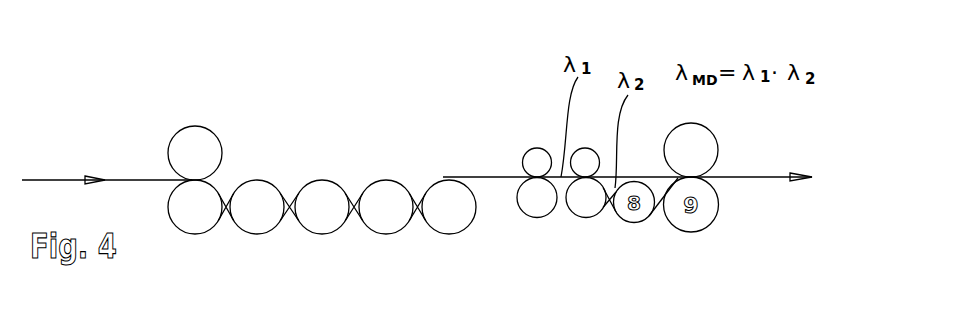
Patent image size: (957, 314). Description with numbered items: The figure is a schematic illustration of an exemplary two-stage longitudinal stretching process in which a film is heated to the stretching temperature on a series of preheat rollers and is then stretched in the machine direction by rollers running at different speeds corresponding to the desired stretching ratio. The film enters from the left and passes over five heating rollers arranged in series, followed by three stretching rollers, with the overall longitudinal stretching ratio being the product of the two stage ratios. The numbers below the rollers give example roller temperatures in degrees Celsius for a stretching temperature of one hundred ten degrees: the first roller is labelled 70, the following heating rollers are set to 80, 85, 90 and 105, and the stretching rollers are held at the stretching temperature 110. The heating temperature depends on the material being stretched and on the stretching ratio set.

The first roller pair (roller 1) 70 is at (195, 202).
The heating roller temperature 80 is at (257, 229).
The heating roller temperature 85 is at (322, 229).
The heating roller temperature 90 is at (386, 229).
The heating roller temperature 105 is at (449, 229).
The stretching temperature 110 is at (561, 213).